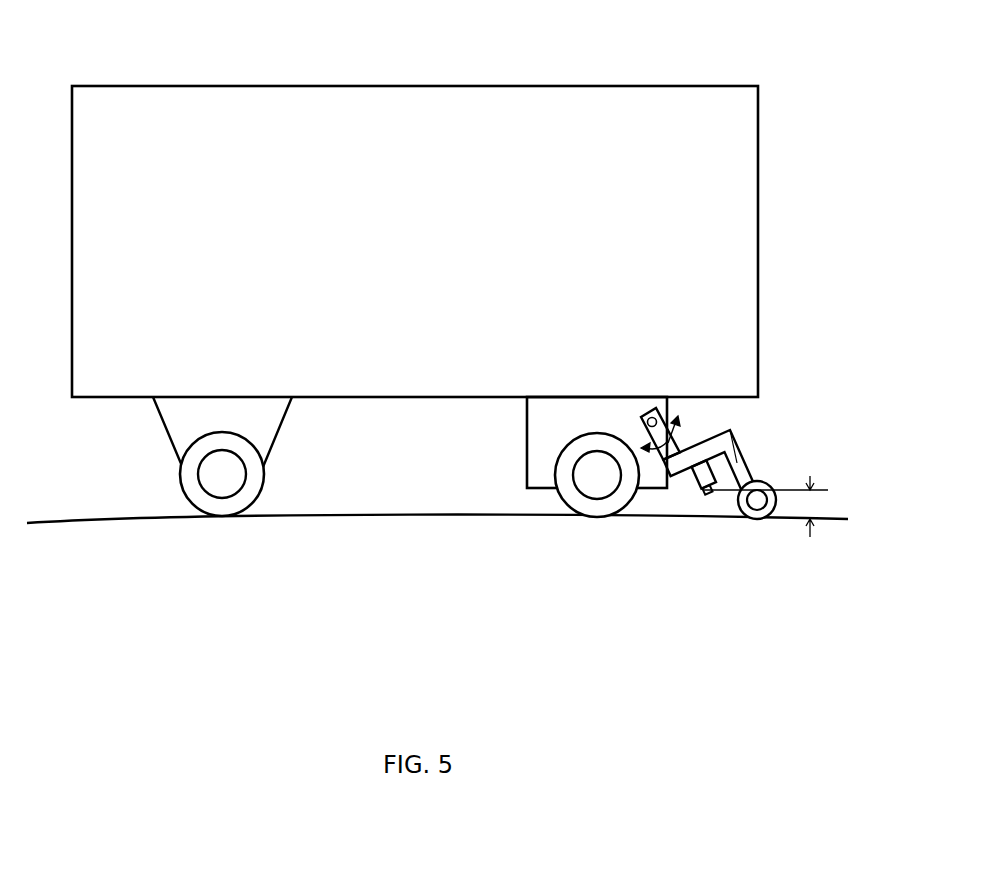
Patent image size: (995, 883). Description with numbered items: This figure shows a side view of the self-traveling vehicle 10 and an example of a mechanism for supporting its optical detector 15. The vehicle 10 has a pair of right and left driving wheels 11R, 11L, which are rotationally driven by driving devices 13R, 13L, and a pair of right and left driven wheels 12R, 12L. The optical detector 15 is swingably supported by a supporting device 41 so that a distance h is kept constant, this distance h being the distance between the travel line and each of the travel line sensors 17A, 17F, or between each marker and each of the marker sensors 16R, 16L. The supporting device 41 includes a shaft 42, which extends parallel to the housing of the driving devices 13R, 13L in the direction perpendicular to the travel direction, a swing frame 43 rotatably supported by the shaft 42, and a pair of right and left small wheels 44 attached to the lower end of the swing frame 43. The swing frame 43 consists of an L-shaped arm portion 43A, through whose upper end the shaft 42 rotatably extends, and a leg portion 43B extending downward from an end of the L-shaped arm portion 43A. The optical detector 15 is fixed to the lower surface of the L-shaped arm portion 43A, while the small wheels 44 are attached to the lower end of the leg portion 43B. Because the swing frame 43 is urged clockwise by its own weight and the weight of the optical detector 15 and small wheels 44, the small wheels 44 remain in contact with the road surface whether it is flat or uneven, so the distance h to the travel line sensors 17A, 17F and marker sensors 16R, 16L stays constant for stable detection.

The self-traveling vehicle 10 is at (373, 86).
The right driving wheel 11R is at (205, 485).
The left driving wheel 11L is at (183, 497).
The right driven wheel 12R is at (561, 511).
The left driven wheel 12L is at (568, 517).
The right driving device 13R is at (531, 442).
The left driving device 13L is at (527, 440).
The optical detector 15 is at (725, 558).
The travel line sensor 17A is at (725, 558).
The travel line sensor 17F is at (725, 558).
The right marker sensor 16R is at (725, 558).
The left marker sensor 16L is at (698, 505).
The supporting device 41 is at (748, 420).
The shaft 42 is at (640, 437).
The swing frame 43 is at (747, 321).
The L-shaped arm portion 43A is at (677, 414).
The leg portion 43B is at (730, 430).
The small wheels 44 is at (741, 512).
The distance h is at (765, 494).